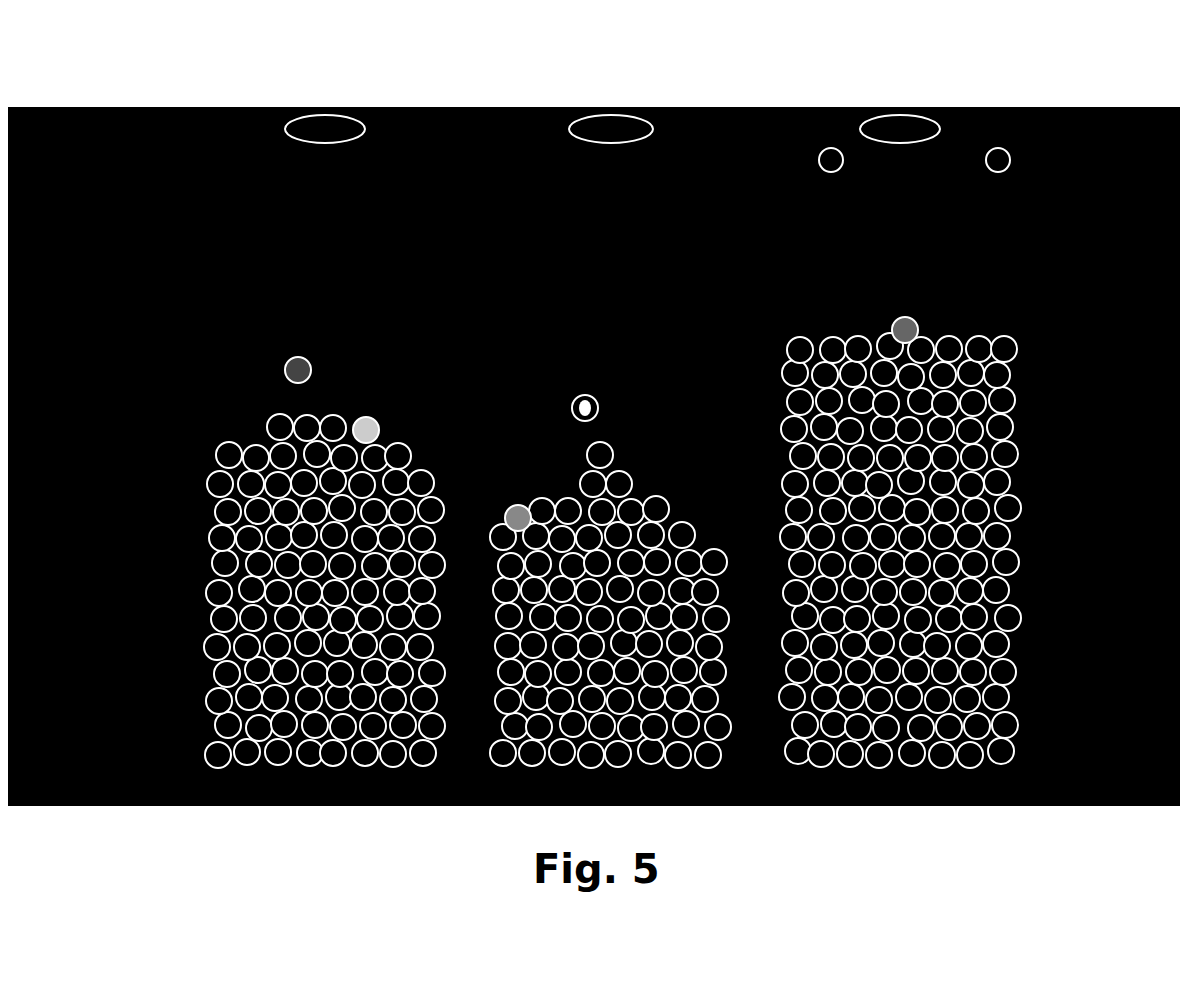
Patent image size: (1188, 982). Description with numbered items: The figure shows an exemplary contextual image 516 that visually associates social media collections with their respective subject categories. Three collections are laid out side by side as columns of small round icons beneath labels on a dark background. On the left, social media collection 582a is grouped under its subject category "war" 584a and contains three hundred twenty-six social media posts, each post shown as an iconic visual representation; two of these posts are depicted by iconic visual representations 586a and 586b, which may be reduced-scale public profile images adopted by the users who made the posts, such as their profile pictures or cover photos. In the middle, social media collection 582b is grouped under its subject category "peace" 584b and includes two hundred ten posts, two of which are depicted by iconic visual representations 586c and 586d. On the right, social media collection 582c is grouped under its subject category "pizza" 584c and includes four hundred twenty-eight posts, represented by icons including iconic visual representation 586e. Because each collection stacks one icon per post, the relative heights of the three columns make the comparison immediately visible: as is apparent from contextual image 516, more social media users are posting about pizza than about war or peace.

The contextual image 516 is at (1120, 78).
The social media collection 582a is at (241, 98).
The social media collection 582b is at (529, 98).
The social media collection 582c is at (822, 99).
The subject category "war" 584a is at (326, 106).
The subject category "peace" 584b is at (614, 106).
The subject category "pizza" 584c is at (900, 106).
The iconic visual representation 586a is at (292, 348).
The iconic visual representation 586b is at (358, 405).
The iconic visual representation 586c is at (508, 496).
The iconic visual representation 586d is at (576, 382).
The iconic visual representation 586e is at (895, 310).